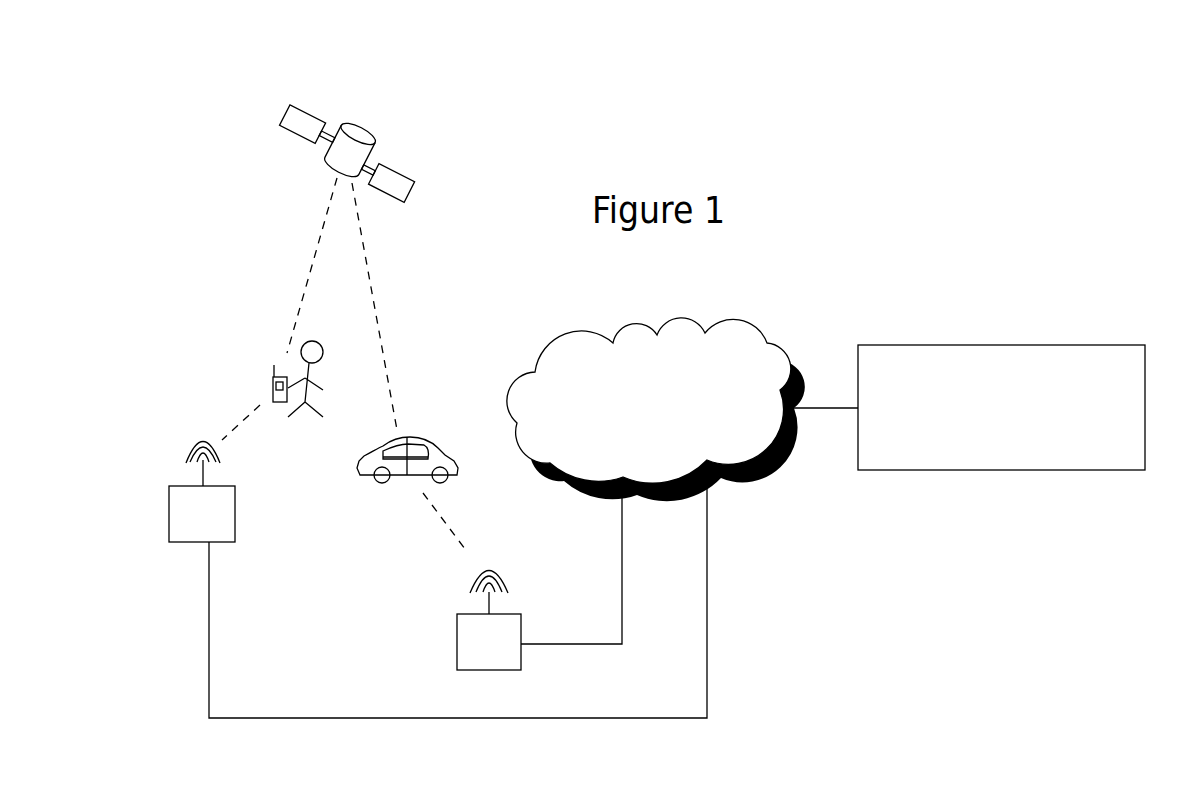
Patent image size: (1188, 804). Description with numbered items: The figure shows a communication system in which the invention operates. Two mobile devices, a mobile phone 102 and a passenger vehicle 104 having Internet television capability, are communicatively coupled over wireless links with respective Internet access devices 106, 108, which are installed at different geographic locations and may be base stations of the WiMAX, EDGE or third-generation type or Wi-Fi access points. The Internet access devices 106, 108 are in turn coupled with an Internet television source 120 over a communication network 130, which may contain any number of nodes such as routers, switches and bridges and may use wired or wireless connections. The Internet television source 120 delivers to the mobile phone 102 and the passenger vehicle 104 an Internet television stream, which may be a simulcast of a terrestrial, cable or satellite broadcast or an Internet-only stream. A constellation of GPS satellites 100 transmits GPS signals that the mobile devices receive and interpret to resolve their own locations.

The GPS satellites 100 is at (398, 160).
The mobile phone 102 is at (262, 378).
The passenger vehicle 104 is at (422, 428).
The Internet access device 106 is at (247, 517).
The Internet access device 108 is at (445, 630).
The Internet television source 120 is at (1129, 457).
The communication network 130 is at (678, 451).